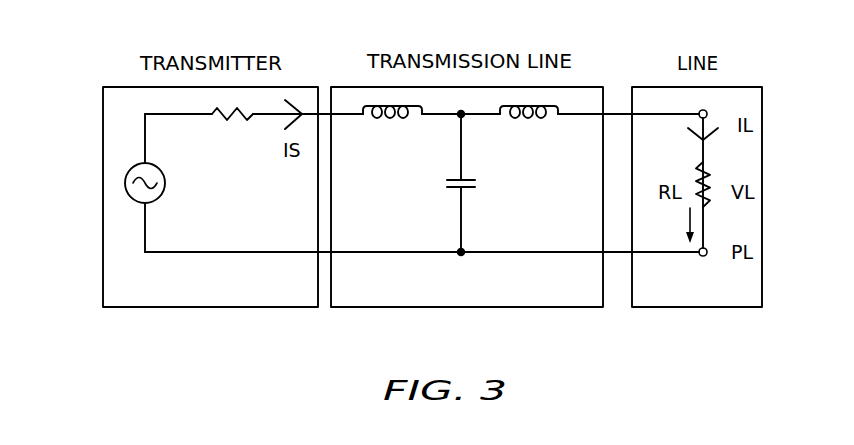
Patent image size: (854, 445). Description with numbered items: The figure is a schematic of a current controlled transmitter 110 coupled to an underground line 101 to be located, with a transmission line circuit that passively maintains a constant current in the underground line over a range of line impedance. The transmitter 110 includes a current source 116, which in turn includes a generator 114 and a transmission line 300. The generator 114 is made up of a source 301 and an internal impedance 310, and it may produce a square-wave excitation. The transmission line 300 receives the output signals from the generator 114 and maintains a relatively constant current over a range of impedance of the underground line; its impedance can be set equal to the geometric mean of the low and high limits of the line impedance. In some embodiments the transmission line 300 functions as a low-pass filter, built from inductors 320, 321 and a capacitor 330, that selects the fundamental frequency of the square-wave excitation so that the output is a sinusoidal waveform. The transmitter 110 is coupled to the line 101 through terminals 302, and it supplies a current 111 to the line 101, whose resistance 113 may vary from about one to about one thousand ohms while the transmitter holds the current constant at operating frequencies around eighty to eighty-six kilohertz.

The current source 116 is at (103, 127).
The generator 114 is at (133, 292).
The internal impedance 310 is at (215, 113).
The source 301 is at (160, 192).
The transmission line 300 is at (387, 253).
The inductor 320 is at (383, 118).
The inductor 321 is at (538, 118).
The capacitor 330 is at (447, 188).
The underground line 101 is at (686, 299).
The terminals 302 is at (708, 112).
The resistance 113 is at (708, 173).
The current 111 is at (686, 214).
The transmitter 110 is at (669, 352).